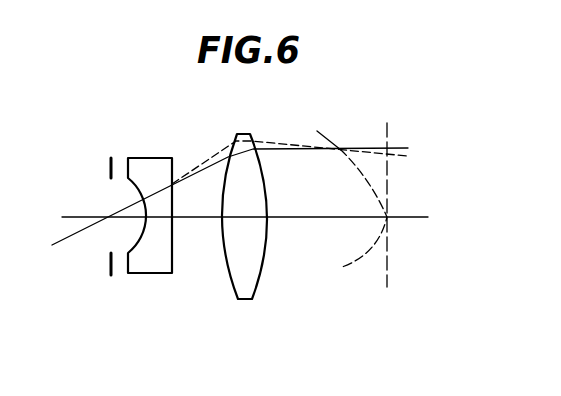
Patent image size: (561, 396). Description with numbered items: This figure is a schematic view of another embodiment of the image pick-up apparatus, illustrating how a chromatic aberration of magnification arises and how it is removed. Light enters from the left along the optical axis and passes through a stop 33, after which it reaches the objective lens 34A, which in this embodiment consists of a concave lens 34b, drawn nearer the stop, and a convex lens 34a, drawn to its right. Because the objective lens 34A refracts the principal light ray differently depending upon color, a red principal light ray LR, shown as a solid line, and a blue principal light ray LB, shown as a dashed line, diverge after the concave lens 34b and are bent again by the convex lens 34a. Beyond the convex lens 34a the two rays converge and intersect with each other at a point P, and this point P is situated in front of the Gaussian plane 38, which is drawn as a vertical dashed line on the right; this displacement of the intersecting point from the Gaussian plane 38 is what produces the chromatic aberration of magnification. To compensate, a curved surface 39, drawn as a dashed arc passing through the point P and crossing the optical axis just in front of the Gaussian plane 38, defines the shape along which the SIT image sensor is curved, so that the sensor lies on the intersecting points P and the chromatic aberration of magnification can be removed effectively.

The stop 33 is at (108, 167).
The objective lens 34A is at (195, 217).
The convex lens 34a is at (236, 290).
The concave lens 34b is at (150, 275).
The Gaussian plane 38 is at (390, 261).
The curved surface 39 is at (358, 257).
The intersecting point P is at (340, 149).
The red principal light ray LR is at (287, 152).
The blue principal light ray LB is at (278, 143).